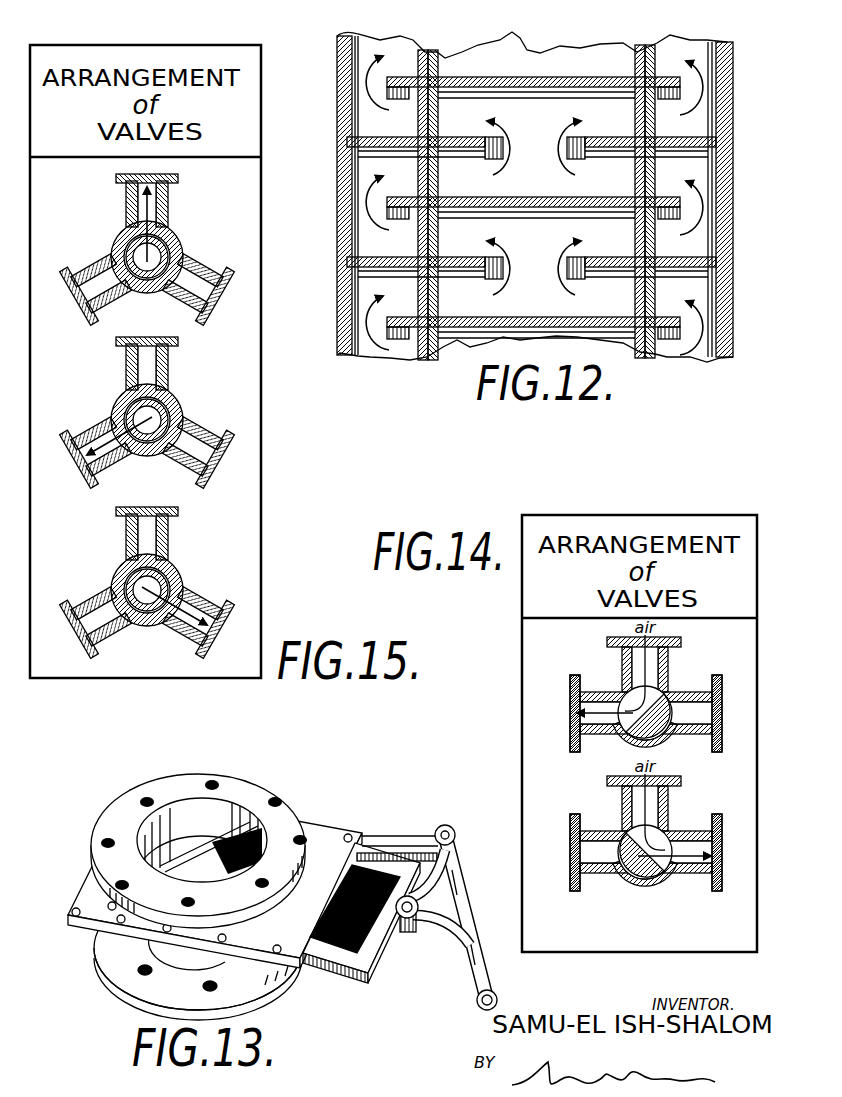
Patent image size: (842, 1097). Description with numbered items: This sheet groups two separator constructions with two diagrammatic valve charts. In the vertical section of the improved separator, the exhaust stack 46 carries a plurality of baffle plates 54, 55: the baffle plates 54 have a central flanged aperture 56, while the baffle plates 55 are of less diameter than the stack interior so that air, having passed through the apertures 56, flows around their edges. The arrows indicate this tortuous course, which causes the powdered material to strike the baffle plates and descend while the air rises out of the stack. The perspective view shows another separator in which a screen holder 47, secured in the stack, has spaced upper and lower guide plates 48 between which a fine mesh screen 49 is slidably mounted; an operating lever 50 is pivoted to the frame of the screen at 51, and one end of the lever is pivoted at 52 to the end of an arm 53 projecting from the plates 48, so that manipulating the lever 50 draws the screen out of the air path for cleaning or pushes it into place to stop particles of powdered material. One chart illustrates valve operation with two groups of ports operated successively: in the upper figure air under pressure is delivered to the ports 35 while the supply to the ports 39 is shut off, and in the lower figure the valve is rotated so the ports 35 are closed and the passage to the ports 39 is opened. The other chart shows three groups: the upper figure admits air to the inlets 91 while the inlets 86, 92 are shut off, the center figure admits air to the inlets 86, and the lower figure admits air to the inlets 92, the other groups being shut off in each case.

In FIG. 14, the ports 35 is at (557, 783).
In FIG. 14, the ports 39 is at (731, 783).
In FIG. 12, the exhaust stack 46 is at (737, 210).
In FIG. 13, the screen holder 47 is at (232, 792).
In FIG. 13, the guide plates 48 is at (330, 836).
In FIG. 13, the fine mesh screen 49 is at (352, 955).
In FIG. 13, the operating lever 50 is at (476, 965).
In FIG. 13, the pivot 51 is at (404, 922).
In FIG. 13, the pivot 52 is at (450, 826).
In FIG. 13, the rod 53 is at (388, 848).
In FIG. 12, the baffle plates 54 is at (600, 140).
In FIG. 12, the baffle plates 55 is at (558, 77).
In FIG. 12, the central flanged aperture 56 is at (545, 128).
In FIG. 15, the inlets 86 is at (92, 451).
In FIG. 15, the inlets 91 is at (147, 358).
In FIG. 15, the inlets 92 is at (203, 451).